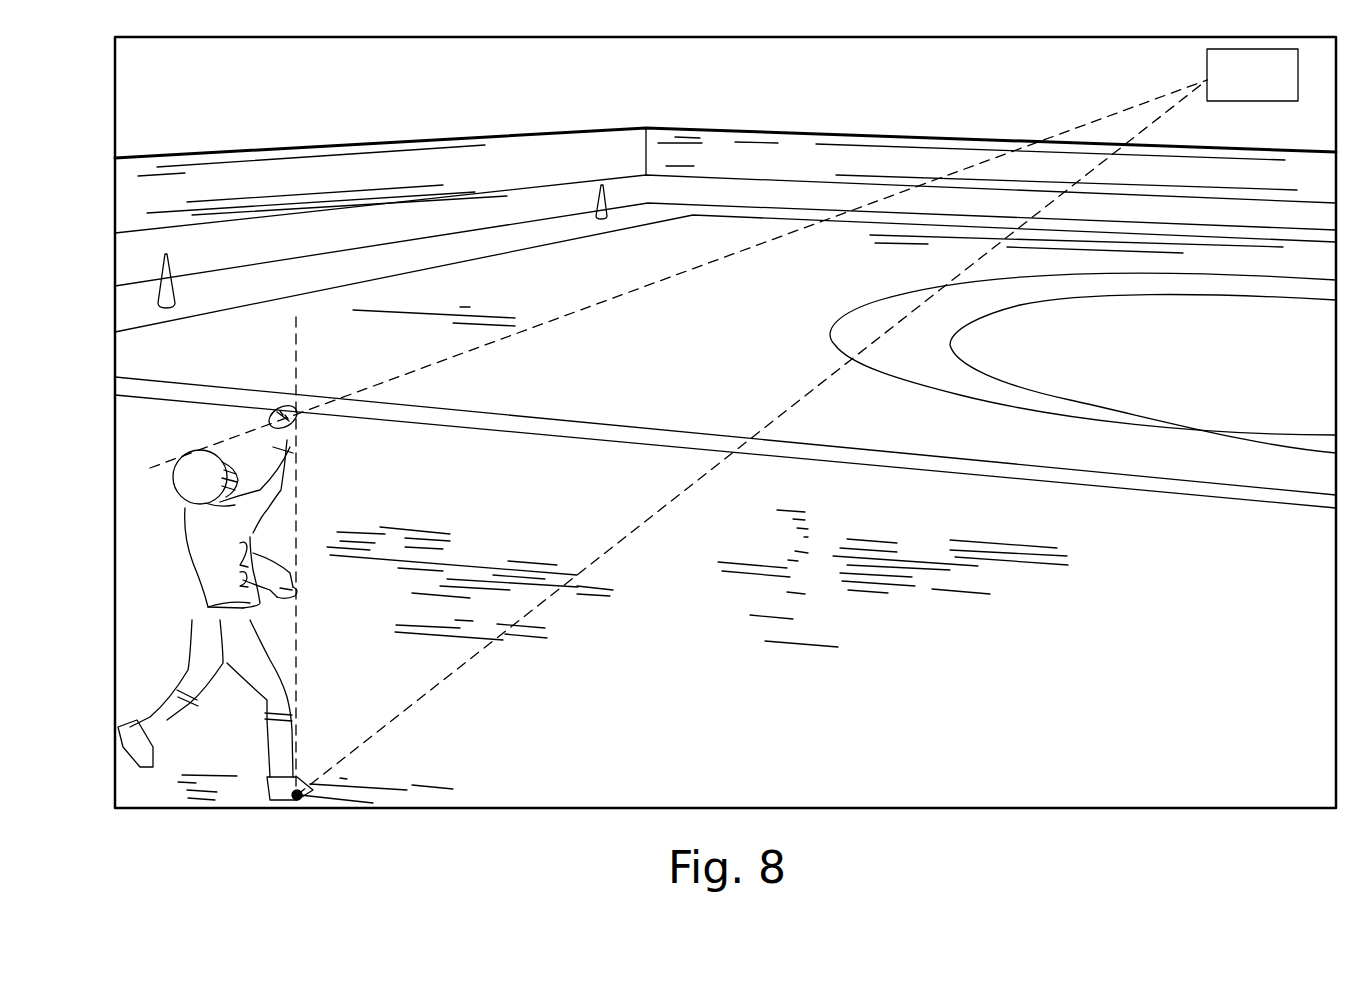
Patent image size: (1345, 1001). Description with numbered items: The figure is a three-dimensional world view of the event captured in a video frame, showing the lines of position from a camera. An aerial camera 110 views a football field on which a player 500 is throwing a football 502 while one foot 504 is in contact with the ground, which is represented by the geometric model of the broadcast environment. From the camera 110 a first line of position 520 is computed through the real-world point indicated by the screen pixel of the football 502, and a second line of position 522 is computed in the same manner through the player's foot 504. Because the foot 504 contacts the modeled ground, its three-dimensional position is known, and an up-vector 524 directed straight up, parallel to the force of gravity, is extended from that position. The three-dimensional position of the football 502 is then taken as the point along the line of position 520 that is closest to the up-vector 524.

The aerial camera 110 is at (1233, 88).
The player 500 is at (273, 663).
The football 502 is at (270, 408).
The foot 504 is at (292, 795).
The line of position 520 is at (682, 272).
The line of position 522 is at (793, 405).
The up-vector 524 is at (300, 522).